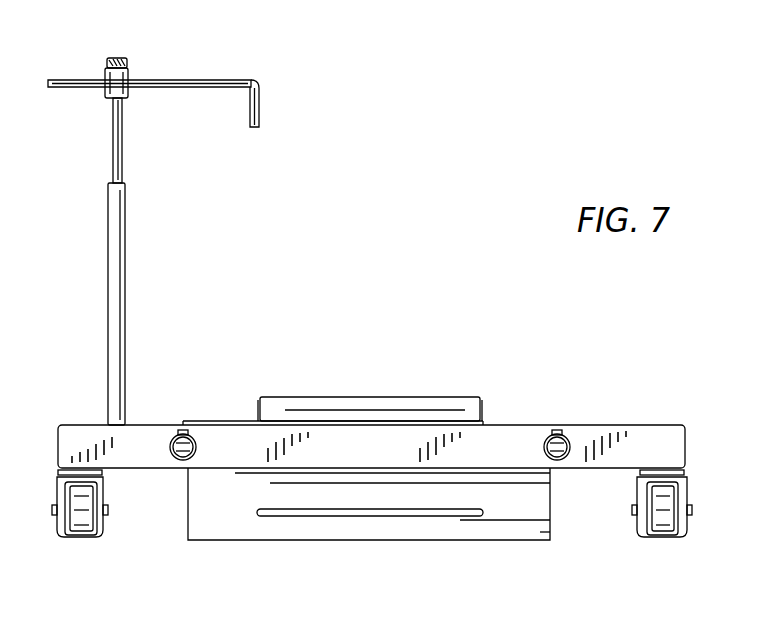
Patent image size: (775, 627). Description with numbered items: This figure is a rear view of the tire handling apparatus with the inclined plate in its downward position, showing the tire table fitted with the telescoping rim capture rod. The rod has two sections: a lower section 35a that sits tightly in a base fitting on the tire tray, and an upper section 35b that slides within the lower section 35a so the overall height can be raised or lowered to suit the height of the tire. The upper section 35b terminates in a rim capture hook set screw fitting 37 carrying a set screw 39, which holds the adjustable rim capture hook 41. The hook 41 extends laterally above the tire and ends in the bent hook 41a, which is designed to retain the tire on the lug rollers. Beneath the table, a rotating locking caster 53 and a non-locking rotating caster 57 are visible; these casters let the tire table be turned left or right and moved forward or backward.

The lower section of telescoping rim capture rod 35a is at (108, 338).
The upper section of telescoping rim capture rod 35b is at (113, 160).
The rim capture hook set screw fitting 37 is at (130, 96).
The set screw 39 is at (110, 59).
The adjustable rim capture hook 41 is at (166, 80).
The hook 41a is at (262, 107).
The rotating locking caster 53 is at (86, 541).
The non-locking rotating caster 57 is at (672, 540).